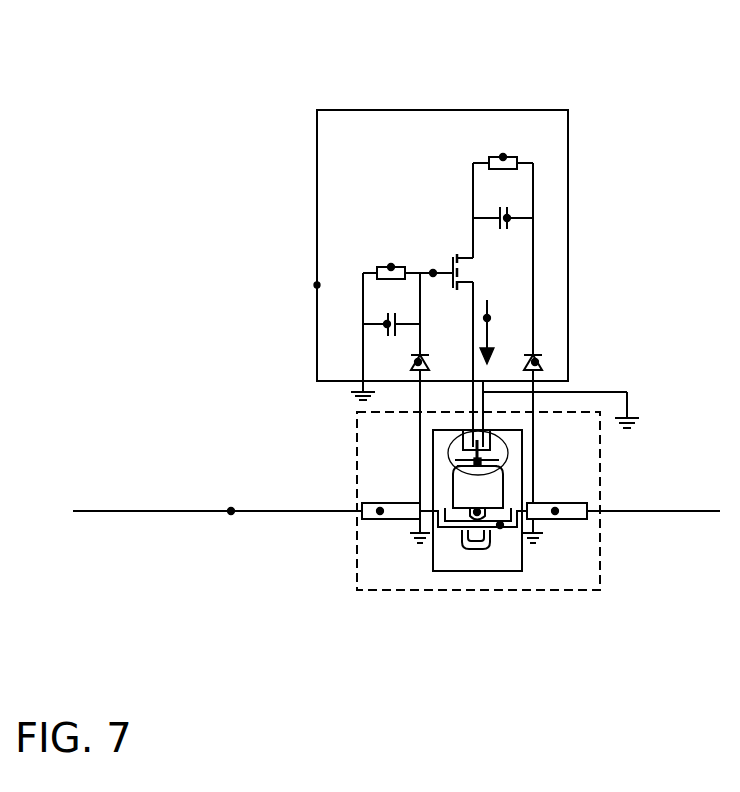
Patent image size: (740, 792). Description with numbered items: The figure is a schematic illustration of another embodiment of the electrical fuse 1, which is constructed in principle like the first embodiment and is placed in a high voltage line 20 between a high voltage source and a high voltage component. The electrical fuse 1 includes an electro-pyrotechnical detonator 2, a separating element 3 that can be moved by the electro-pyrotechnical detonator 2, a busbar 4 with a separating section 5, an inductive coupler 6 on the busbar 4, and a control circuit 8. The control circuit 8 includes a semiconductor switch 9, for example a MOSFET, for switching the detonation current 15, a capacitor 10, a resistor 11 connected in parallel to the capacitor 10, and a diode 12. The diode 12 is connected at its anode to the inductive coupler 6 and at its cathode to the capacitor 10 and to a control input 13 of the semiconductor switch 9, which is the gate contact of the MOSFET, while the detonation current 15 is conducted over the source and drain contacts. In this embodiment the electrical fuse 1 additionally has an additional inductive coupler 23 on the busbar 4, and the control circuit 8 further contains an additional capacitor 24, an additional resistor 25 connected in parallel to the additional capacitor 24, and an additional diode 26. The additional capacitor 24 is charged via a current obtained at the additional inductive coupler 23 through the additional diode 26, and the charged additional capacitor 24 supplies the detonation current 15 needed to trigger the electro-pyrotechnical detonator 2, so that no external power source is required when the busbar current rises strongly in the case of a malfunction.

The electrical fuse 1 is at (290, 92).
The electro-pyrotechnical detonator 2 is at (478, 462).
The separating element 3 is at (477, 512).
The busbar 4 is at (500, 525).
The separating section 5 is at (473, 572).
The inductive coupler 6 is at (380, 519).
The control circuit 8 is at (317, 285).
The semiconductor switch 9 is at (480, 267).
The capacitor 10 is at (387, 324).
The resistor 11 is at (391, 267).
The diode 12 is at (418, 362).
The control input 13 is at (433, 273).
The detonation current 15 is at (487, 318).
The high voltage line 20 is at (231, 511).
The additional inductive coupler 23 is at (555, 519).
The additional capacitor 24 is at (507, 218).
The additional resistor 25 is at (503, 157).
The additional diode 26 is at (535, 362).